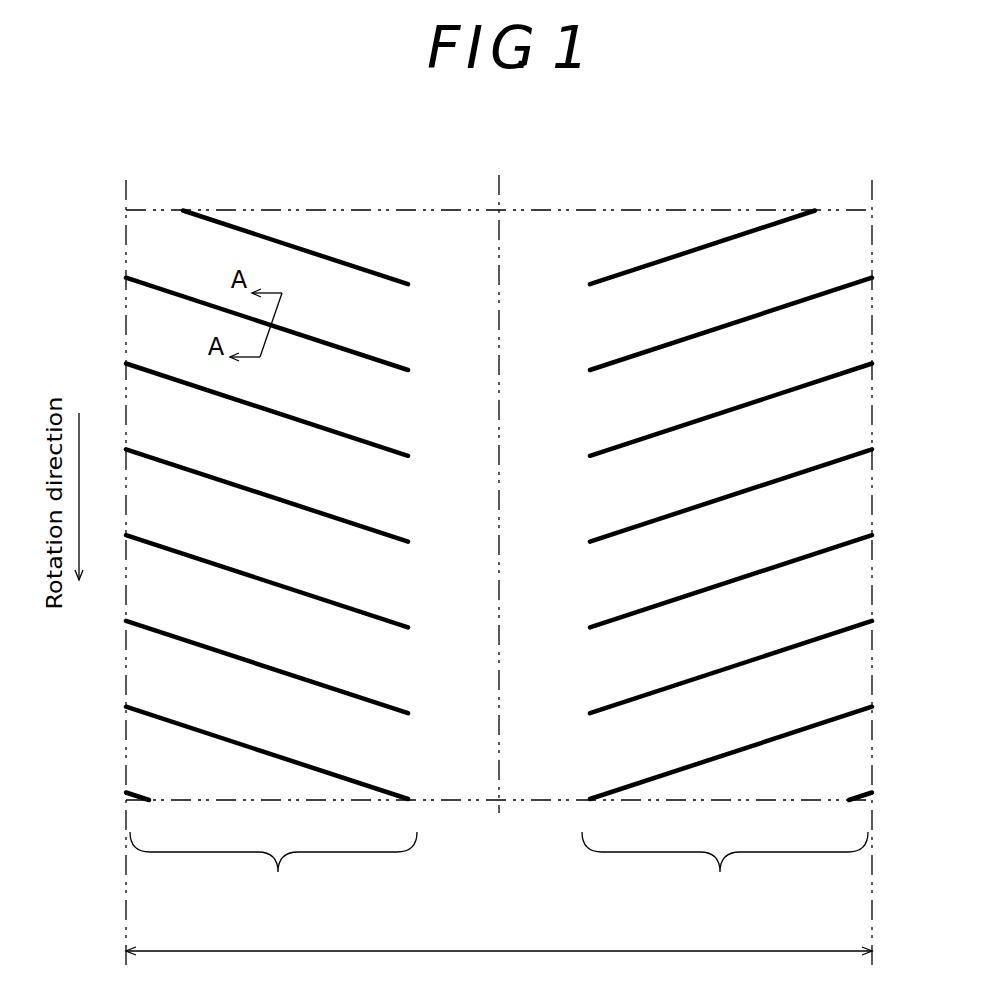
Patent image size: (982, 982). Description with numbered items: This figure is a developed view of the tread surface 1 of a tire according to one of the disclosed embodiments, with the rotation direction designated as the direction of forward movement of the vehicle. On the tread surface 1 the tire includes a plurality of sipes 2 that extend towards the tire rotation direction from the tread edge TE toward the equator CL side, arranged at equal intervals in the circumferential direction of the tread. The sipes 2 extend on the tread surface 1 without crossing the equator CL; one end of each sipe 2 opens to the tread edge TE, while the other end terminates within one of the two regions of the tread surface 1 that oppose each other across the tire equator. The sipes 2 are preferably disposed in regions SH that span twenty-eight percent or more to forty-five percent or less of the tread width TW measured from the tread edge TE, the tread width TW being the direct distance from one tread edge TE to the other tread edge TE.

The tread surface 1 is at (613, 170).
The sipe 2 is at (355, 265).
The tread edge TE is at (498, 560).
The equator CL is at (499, 479).
The region SH is at (499, 867).
The tread width TW is at (499, 938).